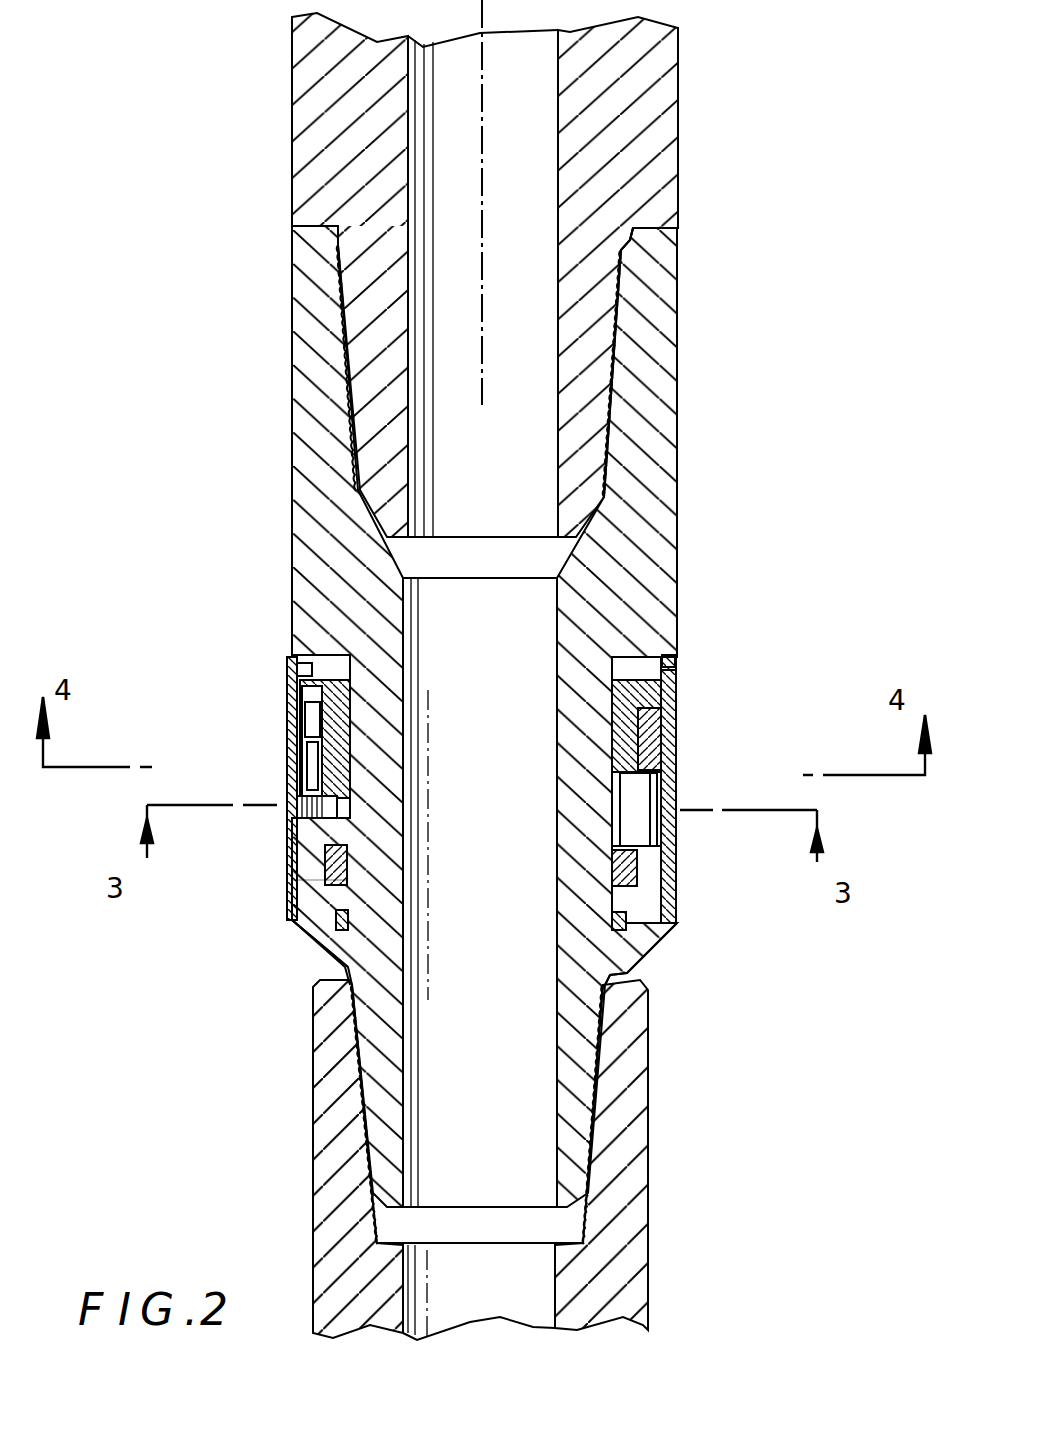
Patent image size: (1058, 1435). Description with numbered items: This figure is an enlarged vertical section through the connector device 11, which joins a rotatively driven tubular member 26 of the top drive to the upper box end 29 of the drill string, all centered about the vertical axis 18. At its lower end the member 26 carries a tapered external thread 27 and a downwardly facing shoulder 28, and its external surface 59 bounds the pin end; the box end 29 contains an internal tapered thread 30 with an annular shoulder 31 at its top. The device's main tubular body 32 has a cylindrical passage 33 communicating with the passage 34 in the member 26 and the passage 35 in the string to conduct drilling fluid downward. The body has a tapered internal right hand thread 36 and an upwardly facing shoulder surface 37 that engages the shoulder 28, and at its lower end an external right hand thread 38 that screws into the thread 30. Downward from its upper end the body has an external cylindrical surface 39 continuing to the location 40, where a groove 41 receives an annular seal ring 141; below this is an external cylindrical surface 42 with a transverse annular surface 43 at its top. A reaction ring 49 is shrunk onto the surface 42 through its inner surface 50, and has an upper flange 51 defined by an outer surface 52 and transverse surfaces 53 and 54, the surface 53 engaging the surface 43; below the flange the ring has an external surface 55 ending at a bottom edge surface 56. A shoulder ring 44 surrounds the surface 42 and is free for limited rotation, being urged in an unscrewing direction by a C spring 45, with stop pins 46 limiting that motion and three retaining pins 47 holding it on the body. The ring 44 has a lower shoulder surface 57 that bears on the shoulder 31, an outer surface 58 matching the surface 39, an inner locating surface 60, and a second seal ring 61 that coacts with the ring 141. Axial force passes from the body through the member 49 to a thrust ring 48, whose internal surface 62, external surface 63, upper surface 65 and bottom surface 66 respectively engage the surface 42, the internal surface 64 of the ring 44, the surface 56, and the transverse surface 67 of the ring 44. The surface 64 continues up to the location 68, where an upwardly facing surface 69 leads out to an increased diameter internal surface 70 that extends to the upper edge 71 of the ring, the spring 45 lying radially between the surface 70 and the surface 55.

The connector device 11 is at (750, 437).
The vertical axis 18 is at (484, 80).
The tubular member 26 is at (300, 62).
The tapered external thread 27 is at (633, 280).
The downwardly facing shoulder 28 is at (677, 233).
The upper box end of drill string pipe 29 is at (652, 1048).
The internal tapered thread 30 is at (578, 1225).
The annular shoulder 31 is at (645, 958).
The main tubular body 32 is at (677, 372).
The cylindrical passage 33 is at (557, 610).
The passage 34 is at (412, 242).
The passage 35 is at (415, 1270).
The tapered internal right hand thread 36 is at (612, 428).
The upwardly facing annular shoulder surface 37 is at (320, 226).
The downwardly tapered external right hand thread 38 is at (600, 1130).
The external cylindrical surface 39 is at (290, 290).
The location 40 is at (292, 658).
The groove 41 is at (666, 655).
The external cylindrical surface 42 is at (612, 712).
The annular surface 43 is at (612, 684).
The shoulder ring 44 is at (678, 828).
The C spring 45 is at (655, 746).
The stop pins 46 is at (660, 792).
The retaining pins 47 is at (290, 838).
The thrust ring 48 is at (634, 862).
The reaction ring 49 is at (612, 748).
The inner cylindrical surface 50 is at (322, 722).
The annular flange 51 is at (677, 690).
The outer cylindrical surface 52 is at (300, 688).
The transverse surface 53 is at (330, 682).
The transverse surface 54 is at (656, 718).
The external cylindrical surface 55 is at (648, 762).
The annular bottom edge surface 56 is at (355, 830).
The shoulder surface 57 is at (320, 975).
The outer surface 58 is at (626, 922).
The surface 59 is at (680, 100).
The inner cylindrical surface 60 is at (352, 925).
The second seal ring 61 is at (348, 905).
The internal cylindrical surface 62 is at (348, 855).
The external cylindrical surface 63 is at (336, 925).
The internal cylindrical surface 64 is at (328, 876).
The annular upper surface 65 is at (612, 832).
The annular bottom surface 66 is at (612, 918).
The transverse annular surface 67 is at (612, 872).
The location 68 is at (335, 758).
The upwardly facing transverse surface 69 is at (305, 742).
The increased diameter internal surface 70 is at (302, 720).
The upper edge 71 is at (668, 660).
The annular seal ring 141 is at (675, 664).